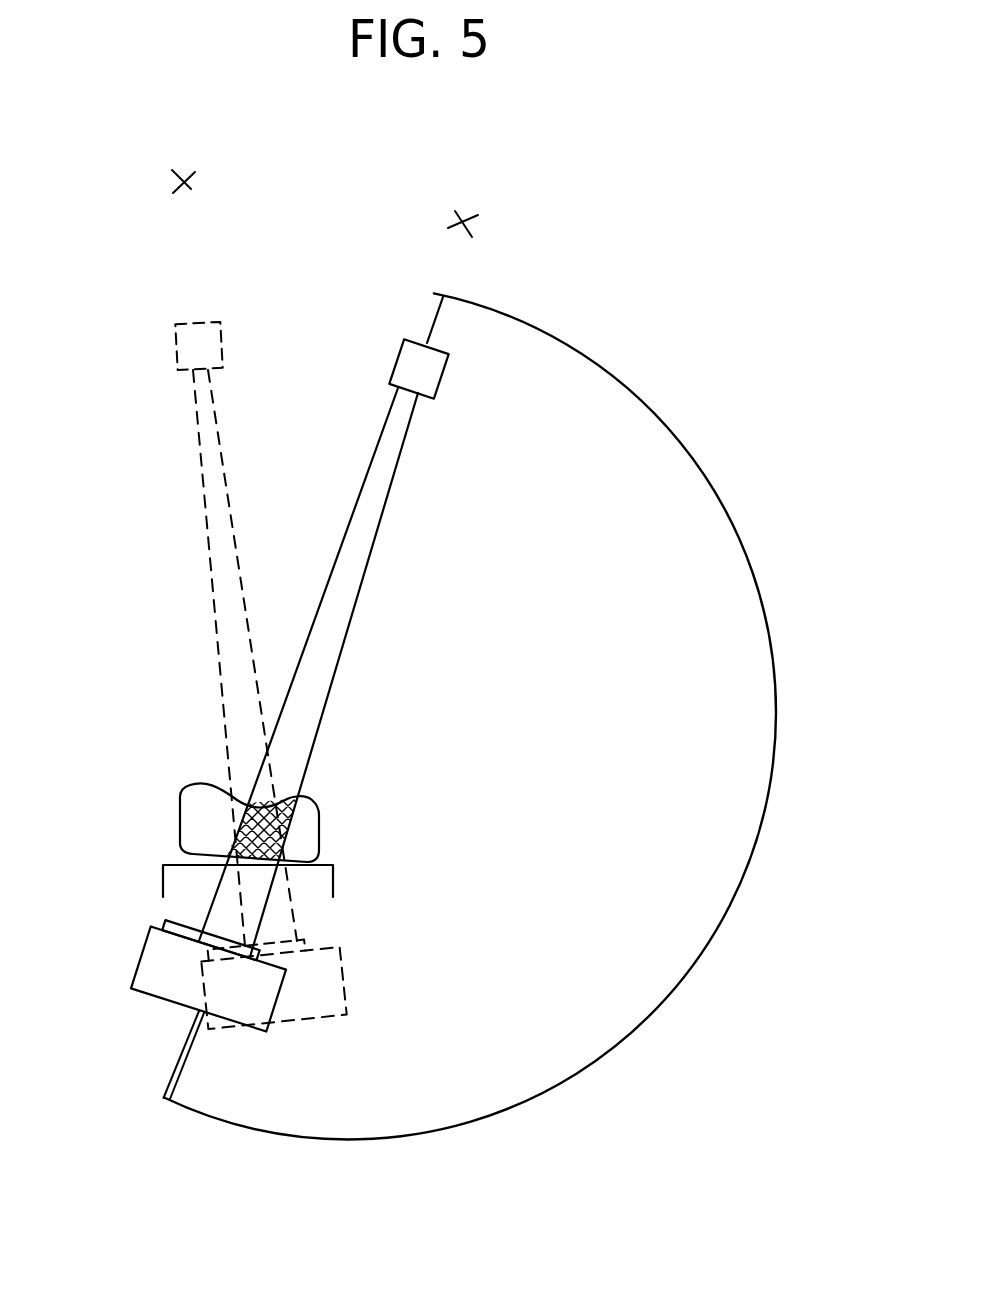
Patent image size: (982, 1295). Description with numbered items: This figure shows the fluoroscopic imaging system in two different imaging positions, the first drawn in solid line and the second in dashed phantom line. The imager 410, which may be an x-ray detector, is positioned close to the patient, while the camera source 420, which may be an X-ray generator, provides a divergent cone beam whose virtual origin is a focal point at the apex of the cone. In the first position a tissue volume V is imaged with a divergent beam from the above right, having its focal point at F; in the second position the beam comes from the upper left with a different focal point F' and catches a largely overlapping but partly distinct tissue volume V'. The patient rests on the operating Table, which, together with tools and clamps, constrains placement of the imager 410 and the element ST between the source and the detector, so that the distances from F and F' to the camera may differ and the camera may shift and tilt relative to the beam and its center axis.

The imager 410 is at (399, 360).
The camera source 420 is at (143, 950).
The focal point F is at (489, 226).
The focal point F' is at (259, 597).
The tissue volume V is at (273, 826).
The shifted imaging volume V' is at (212, 744).
The scatter grid / detector plate ST is at (166, 920).
The patient table Table is at (163, 866).